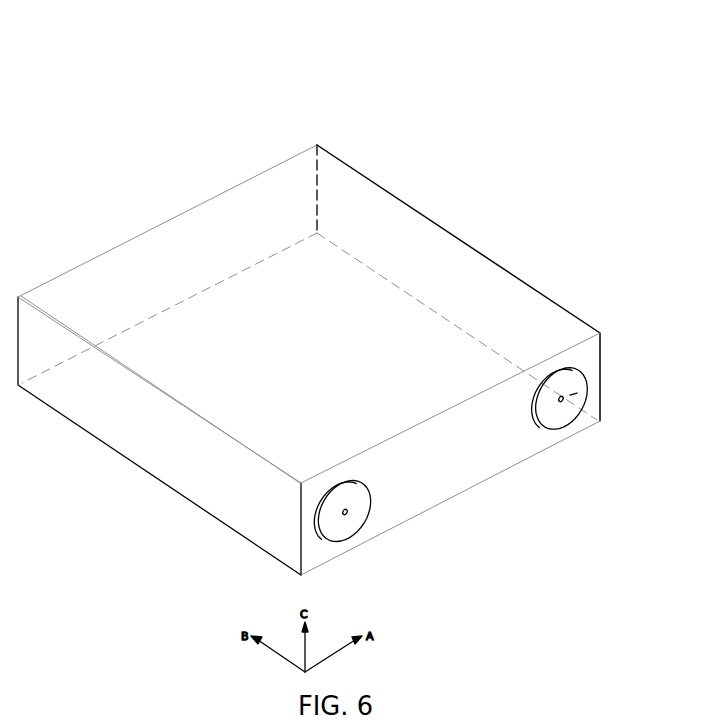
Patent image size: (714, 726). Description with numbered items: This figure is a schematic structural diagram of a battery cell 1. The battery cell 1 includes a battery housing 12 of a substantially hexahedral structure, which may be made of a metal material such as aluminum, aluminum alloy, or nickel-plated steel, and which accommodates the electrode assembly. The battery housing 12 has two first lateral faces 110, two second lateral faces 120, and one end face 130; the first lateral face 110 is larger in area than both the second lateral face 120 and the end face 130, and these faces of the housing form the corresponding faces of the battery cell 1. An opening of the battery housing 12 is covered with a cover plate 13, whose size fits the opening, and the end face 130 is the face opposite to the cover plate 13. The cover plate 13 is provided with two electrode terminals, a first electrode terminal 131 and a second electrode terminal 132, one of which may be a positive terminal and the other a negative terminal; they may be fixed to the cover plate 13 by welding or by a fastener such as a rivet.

The battery cell 1 is at (315, 40).
The battery housing 12 is at (472, 130).
The cover plate 13 is at (520, 516).
The first lateral face 110 is at (377, 322).
The second lateral face 120 is at (145, 438).
The end face 130 is at (143, 284).
The first electrode terminal 131 is at (567, 412).
The second electrode terminal 132 is at (345, 520).